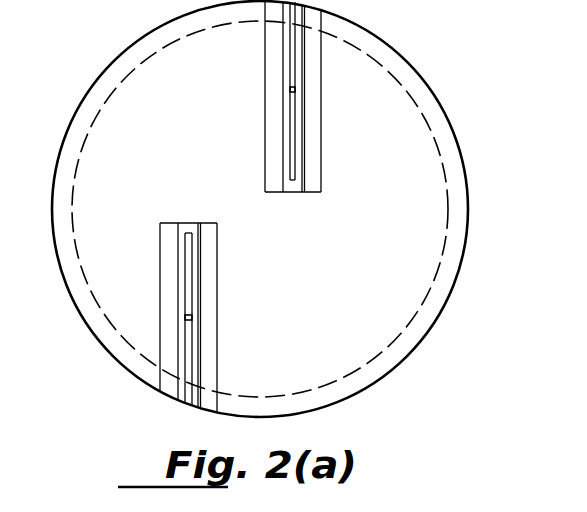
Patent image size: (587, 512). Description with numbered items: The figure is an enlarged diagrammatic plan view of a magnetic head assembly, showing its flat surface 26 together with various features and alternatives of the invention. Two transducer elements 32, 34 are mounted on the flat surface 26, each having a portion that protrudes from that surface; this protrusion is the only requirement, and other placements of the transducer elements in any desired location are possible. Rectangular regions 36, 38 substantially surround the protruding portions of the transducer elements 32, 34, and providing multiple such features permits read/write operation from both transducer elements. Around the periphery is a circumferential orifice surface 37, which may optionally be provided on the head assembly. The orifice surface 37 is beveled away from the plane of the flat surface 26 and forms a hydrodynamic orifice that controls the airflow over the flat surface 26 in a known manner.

The flat surface 26 is at (366, 284).
The circumferential orifice surface 37 is at (447, 267).
The transducer element 34 is at (293, 107).
The rectangular region 38 is at (299, 165).
The rectangular region 36 is at (194, 257).
The transducer element 32 is at (192, 350).